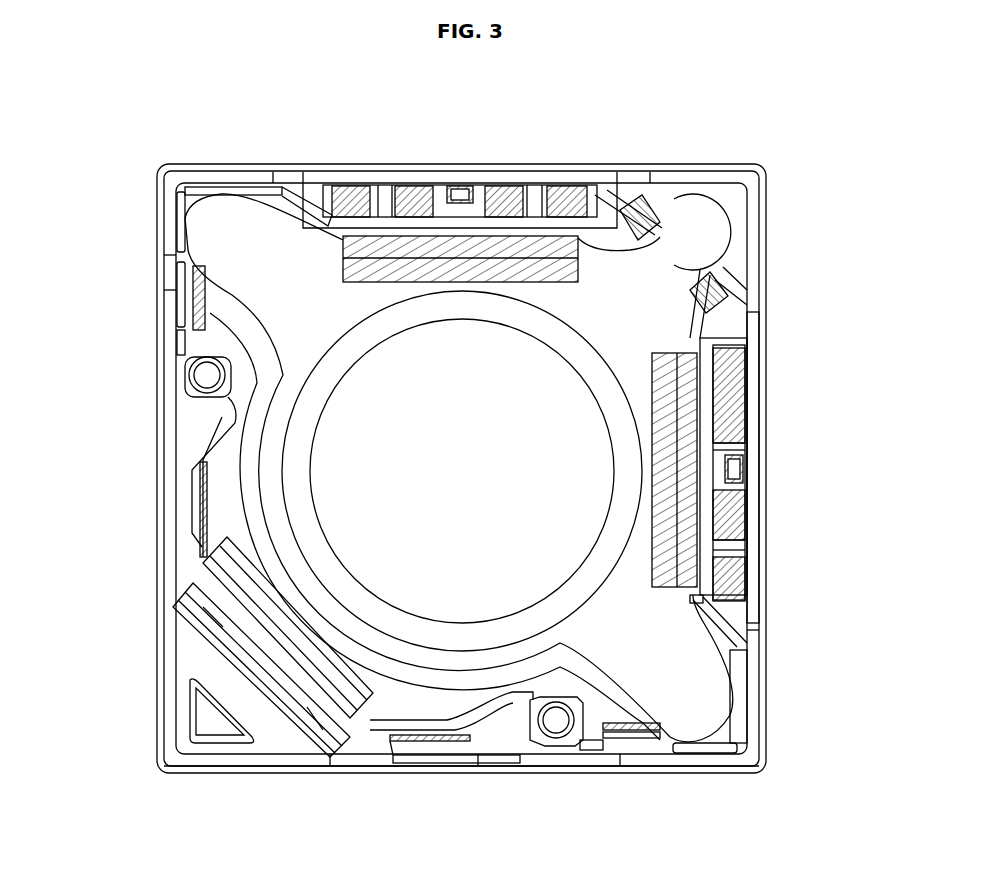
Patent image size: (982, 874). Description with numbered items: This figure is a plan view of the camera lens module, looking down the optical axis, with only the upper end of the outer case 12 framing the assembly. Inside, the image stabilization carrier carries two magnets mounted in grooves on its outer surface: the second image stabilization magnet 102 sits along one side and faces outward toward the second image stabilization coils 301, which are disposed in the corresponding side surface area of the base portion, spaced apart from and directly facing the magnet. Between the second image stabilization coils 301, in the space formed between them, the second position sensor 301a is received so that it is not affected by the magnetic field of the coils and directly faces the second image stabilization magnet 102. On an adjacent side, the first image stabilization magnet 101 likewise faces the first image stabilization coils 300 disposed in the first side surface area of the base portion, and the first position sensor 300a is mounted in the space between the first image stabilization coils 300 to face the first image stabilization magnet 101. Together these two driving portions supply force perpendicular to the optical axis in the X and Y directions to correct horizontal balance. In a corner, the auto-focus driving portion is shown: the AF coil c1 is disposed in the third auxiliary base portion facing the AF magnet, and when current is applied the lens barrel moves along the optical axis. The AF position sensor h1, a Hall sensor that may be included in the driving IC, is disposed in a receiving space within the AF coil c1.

The outer case 12 is at (460, 775).
The first image stabilization magnet 101 is at (759, 352).
The second image stabilization magnet 102 is at (348, 258).
The first image stabilization coil 300 is at (747, 372).
The first position sensor 300a is at (745, 468).
The second image stabilization coil 301 is at (355, 186).
The second position sensor 301a is at (462, 186).
The AF coil c1 is at (205, 603).
The AF position sensor h1 is at (312, 643).